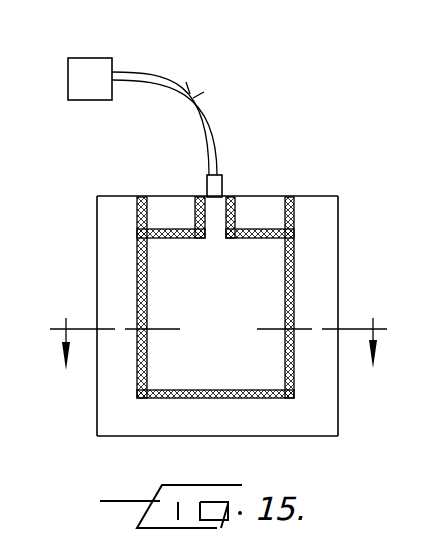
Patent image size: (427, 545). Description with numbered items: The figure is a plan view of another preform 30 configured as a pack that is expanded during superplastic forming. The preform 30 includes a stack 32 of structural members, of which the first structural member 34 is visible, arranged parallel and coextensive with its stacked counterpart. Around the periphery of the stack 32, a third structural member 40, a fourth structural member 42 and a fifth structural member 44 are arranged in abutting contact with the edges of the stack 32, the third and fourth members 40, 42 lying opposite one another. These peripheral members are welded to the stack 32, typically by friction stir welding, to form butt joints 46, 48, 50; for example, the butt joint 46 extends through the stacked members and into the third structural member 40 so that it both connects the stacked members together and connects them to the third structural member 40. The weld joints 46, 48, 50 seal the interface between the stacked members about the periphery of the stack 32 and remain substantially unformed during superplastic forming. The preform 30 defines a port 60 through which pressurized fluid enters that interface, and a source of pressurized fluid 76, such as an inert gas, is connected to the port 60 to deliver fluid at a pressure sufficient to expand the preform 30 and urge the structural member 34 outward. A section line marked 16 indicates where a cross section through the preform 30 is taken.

The source of pressurized fluid 76 is at (85, 68).
The port 60 is at (222, 183).
The preform 30 is at (130, 172).
The stack 32 is at (257, 257).
The first structural member 34 is at (265, 290).
The third structural member 40 is at (113, 382).
The fourth structural member 42 is at (323, 400).
The fifth structural member 44 is at (202, 423).
The butt joint 46 is at (137, 247).
The butt joint 48 is at (292, 252).
The butt joint 50 is at (248, 398).
The section line 16- 16 is at (219, 326).